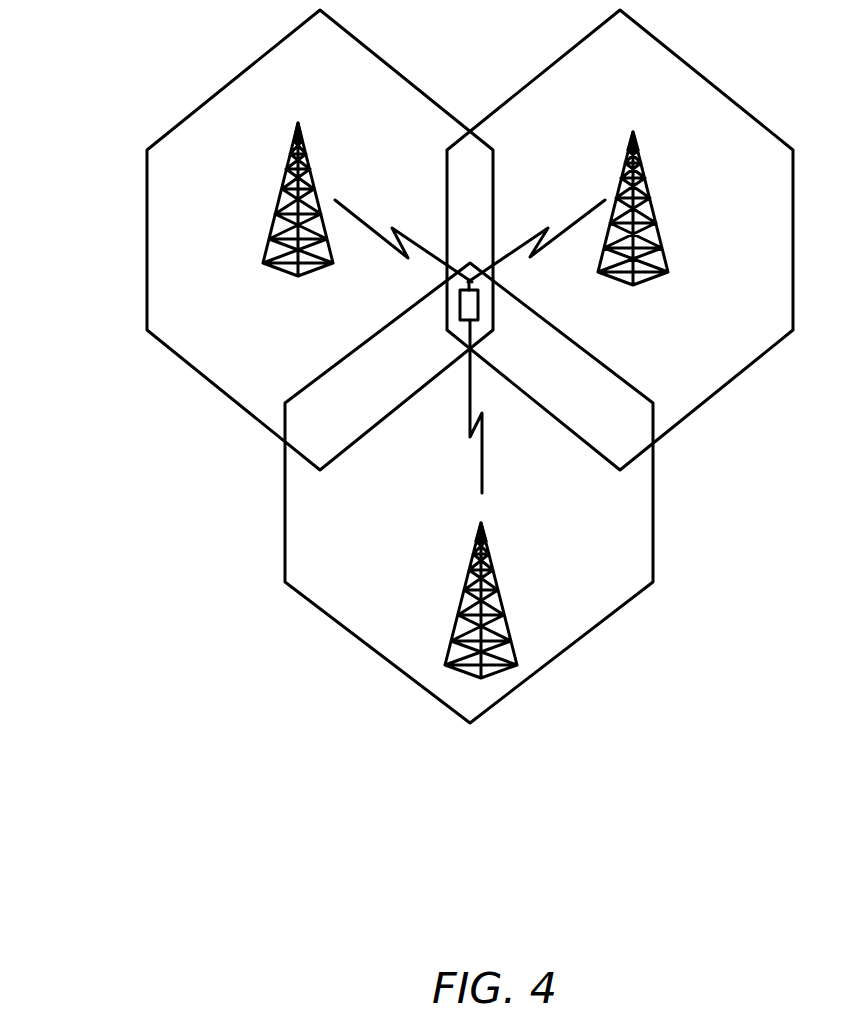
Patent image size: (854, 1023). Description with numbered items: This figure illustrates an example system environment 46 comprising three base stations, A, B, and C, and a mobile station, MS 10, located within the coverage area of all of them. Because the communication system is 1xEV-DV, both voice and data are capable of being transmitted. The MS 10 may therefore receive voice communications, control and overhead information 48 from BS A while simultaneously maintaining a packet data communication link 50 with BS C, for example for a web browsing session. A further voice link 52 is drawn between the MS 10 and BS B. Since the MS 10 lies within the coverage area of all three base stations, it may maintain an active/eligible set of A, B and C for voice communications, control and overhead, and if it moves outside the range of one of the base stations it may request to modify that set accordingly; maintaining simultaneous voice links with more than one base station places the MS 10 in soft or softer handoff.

The MS 10 is at (460, 302).
The system environment 46 is at (148, 678).
The voice communications, control and overhead information 48 is at (395, 205).
The packet data communication link 50 is at (577, 203).
The voice connection to base station B 52 is at (544, 478).